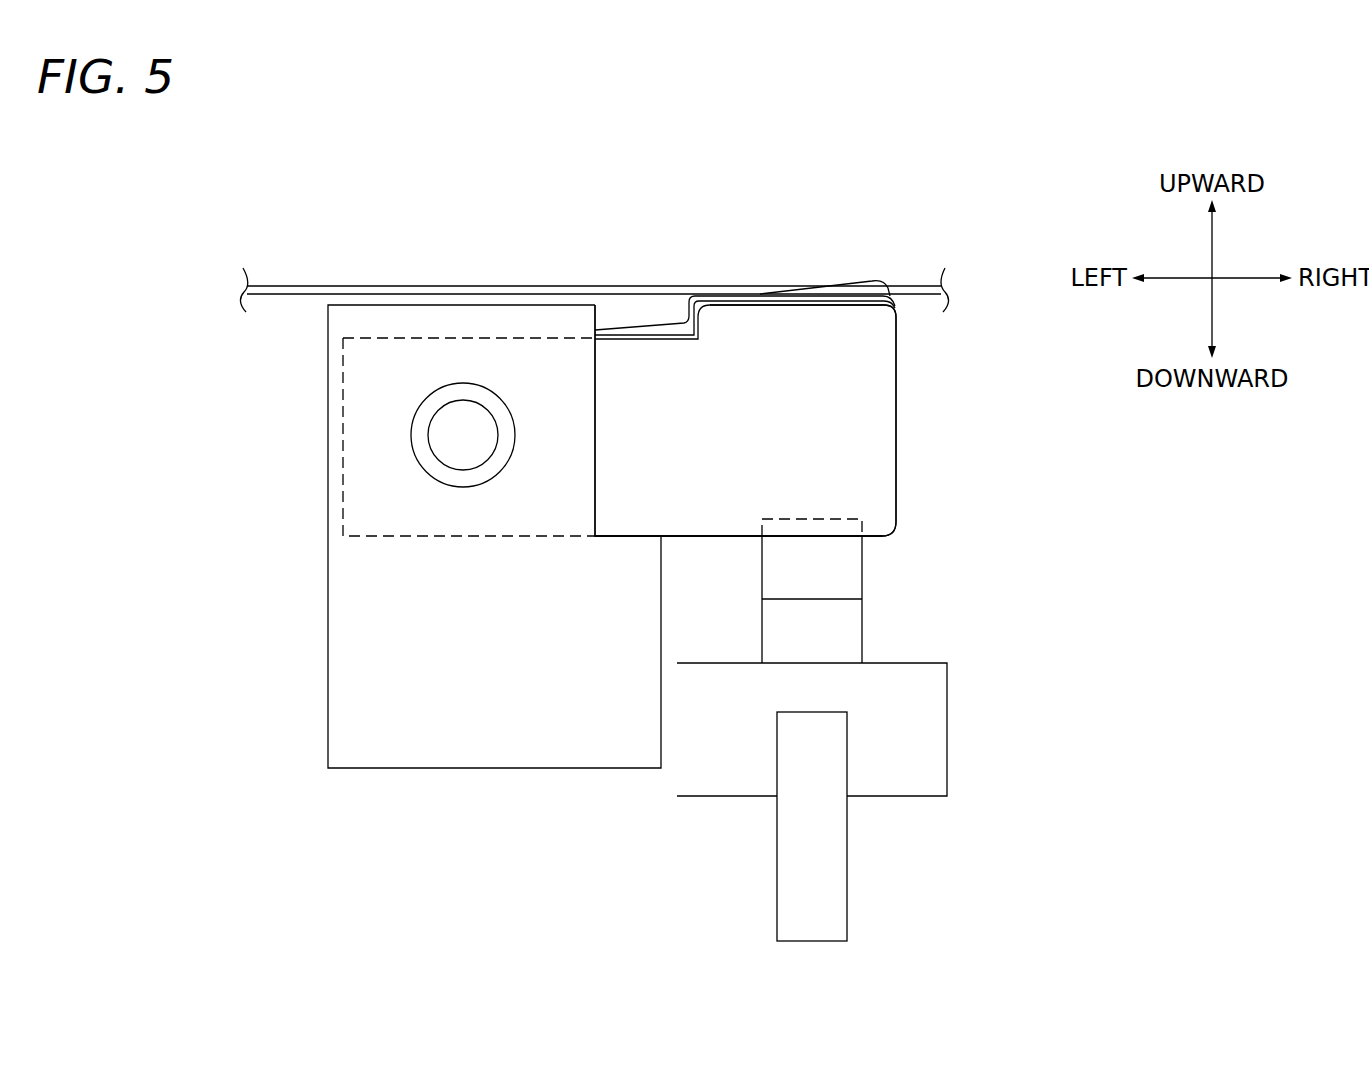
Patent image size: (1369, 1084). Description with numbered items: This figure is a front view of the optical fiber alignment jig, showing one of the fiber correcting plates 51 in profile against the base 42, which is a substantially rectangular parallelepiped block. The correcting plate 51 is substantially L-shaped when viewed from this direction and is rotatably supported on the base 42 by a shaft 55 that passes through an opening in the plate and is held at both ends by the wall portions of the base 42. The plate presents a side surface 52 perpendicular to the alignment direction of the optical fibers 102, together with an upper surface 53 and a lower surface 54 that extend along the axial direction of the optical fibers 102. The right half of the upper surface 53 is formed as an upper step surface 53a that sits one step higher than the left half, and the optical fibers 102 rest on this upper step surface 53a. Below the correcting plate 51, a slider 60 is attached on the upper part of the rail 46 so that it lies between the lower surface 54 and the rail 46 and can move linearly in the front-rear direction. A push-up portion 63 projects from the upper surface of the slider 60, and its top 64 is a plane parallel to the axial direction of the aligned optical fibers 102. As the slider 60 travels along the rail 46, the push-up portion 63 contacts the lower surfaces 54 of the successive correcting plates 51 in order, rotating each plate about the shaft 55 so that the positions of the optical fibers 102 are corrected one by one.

The base 42 is at (302, 423).
The rail 46 is at (835, 871).
The fiber correcting plate 51 is at (930, 395).
The side surface 52 is at (867, 431).
The upper surface 53 is at (628, 332).
The upper step surface 53a is at (782, 300).
The lower surface 54 is at (710, 541).
The shaft 55 is at (466, 403).
The slider 60 is at (925, 730).
The push-up portion 63 is at (848, 578).
The top 64 is at (827, 518).
The optical fiber 102 is at (637, 287).